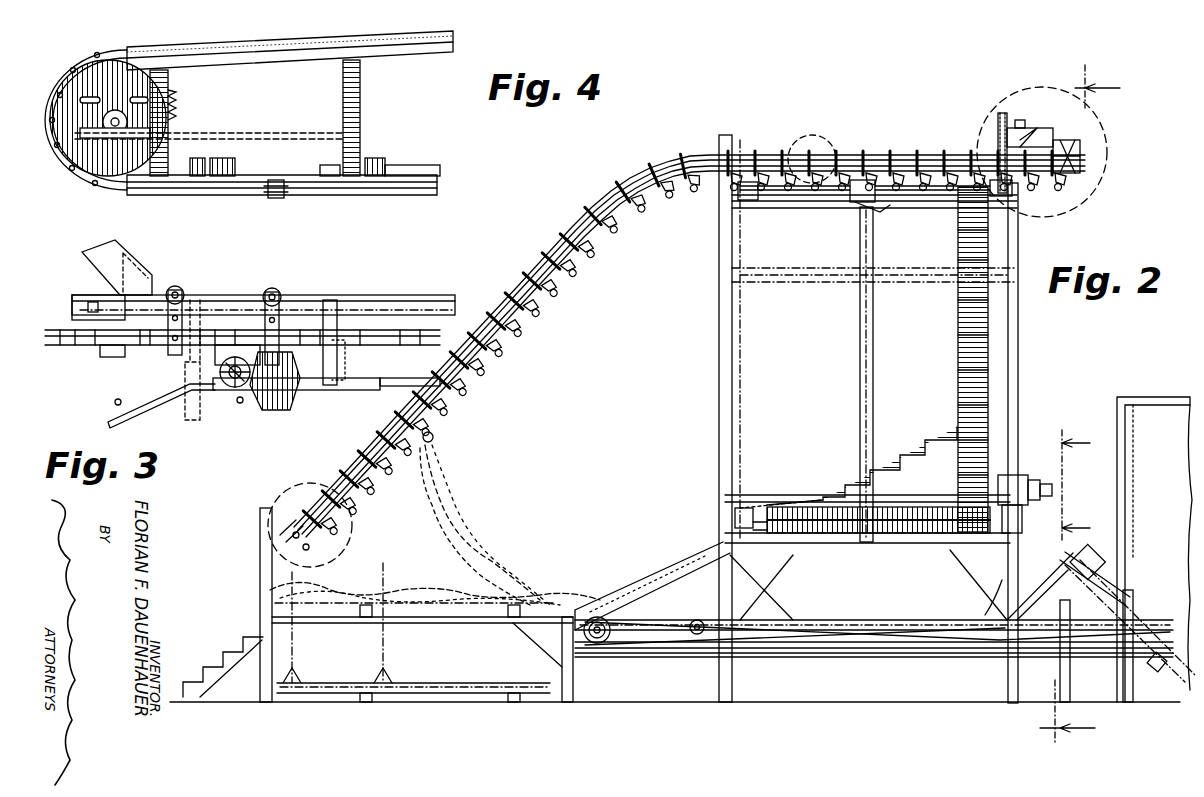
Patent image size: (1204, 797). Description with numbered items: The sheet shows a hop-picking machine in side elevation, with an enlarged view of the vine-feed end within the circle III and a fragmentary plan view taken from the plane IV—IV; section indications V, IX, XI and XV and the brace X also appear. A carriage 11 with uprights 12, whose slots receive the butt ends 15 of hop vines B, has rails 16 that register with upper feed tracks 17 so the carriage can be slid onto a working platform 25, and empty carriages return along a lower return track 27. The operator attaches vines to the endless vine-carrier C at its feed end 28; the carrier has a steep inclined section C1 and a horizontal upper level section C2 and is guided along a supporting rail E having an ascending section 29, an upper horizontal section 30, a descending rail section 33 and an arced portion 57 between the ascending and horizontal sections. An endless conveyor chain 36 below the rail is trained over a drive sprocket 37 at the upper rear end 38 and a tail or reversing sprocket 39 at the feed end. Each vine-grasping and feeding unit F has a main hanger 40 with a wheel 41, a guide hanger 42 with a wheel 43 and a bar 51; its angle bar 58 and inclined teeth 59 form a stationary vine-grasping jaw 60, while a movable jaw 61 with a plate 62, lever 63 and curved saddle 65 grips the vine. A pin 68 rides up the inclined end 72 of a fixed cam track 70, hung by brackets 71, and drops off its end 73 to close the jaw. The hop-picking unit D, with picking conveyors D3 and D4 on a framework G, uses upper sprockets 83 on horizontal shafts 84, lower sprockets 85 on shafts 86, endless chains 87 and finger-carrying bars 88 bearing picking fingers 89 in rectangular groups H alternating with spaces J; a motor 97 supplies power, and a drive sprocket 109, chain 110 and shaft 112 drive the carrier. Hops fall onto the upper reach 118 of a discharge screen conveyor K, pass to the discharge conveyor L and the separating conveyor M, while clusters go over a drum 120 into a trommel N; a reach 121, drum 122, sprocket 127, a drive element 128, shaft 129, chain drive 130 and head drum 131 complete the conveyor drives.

In FIG. 2, the carriage 11 is at (489, 675).
In FIG. 2, the uprights 12 is at (288, 575).
In FIG. 2, the butt ends 15 is at (435, 438).
In FIG. 2, the rails 16 is at (520, 605).
In FIG. 2, the upper feed tracks 17 is at (513, 617).
In FIG. 2, the working platform 25 is at (448, 625).
In FIG. 2, the lower return track 27 is at (360, 696).
In FIG. 4, the feed end 28 is at (90, 198).
In FIG. 3, the feed end 28 is at (95, 380).
In FIG. 2, the feed end 28 is at (270, 552).
In FIG. 4, the ascending section 29 is at (217, 203).
In FIG. 2, the ascending section 29 is at (325, 474).
In FIG. 2, the upper horizontal section 30 is at (773, 149).
In FIG. 4, the descending rail section 33 is at (287, 38).
In FIG. 4, the endless conveyor chain 36 is at (62, 160).
In FIG. 3, the endless conveyor chain 36 is at (78, 345).
In FIG. 2, the endless conveyor chain 36 is at (605, 238).
In FIG. 2, the drive sprocket 37 is at (1078, 172).
In FIG. 2, the upper rear end 38 is at (1094, 155).
In FIG. 4, the tail or reversing sprocket 39 is at (80, 80).
In FIG. 3, the tail or reversing sprocket 39 is at (72, 316).
In FIG. 2, the tail or reversing sprocket 39 is at (278, 540).
In FIG. 3, the main hanger 40 is at (290, 325).
In FIG. 2, the main hanger 40 is at (536, 288).
In FIG. 4, the wheel 41 is at (290, 198).
In FIG. 3, the wheel 41 is at (275, 288).
In FIG. 3, the guide hanger 42 is at (200, 320).
In FIG. 2, the guide hanger 42 is at (520, 302).
In FIG. 4, the wheel 43 is at (140, 190).
In FIG. 3, the wheel 43 is at (176, 286).
In FIG. 3, the bar 51 is at (240, 345).
In FIG. 2, the arced portion 57 is at (667, 165).
In FIG. 3, the angle bar 58 is at (292, 405).
In FIG. 3, the inclined teeth 59 is at (268, 412).
In FIG. 3, the stationary vine-grasping jaw 60 is at (243, 418).
In FIG. 2, the stationary vine-grasping jaw 60 is at (466, 409).
In FIG. 3, the movable jaw 61 is at (282, 383).
In FIG. 2, the movable jaw 61 is at (529, 347).
In FIG. 3, the plate 62 is at (215, 392).
In FIG. 4, the lever 63 is at (232, 160).
In FIG. 3, the lever 63 is at (185, 372).
In FIG. 3, the curved saddle 65 is at (232, 357).
In FIG. 3, the pin 68 is at (117, 399).
In FIG. 4, the fixed cam track 70 is at (378, 157).
In FIG. 3, the fixed cam track 70 is at (358, 390).
In FIG. 2, the fixed cam track 70 is at (325, 537).
In FIG. 4, the brackets 71 is at (200, 158).
In FIG. 3, the brackets 71 is at (345, 372).
In FIG. 3, the inclined end 72 is at (110, 424).
In FIG. 2, the inclined end 72 is at (312, 550).
In FIG. 4, the end of the track 73 is at (392, 170).
In FIG. 3, the end of the track 73 is at (405, 387).
In FIG. 2, the upper sprockets 83 is at (740, 190).
In FIG. 2, the horizontal shafts 84 is at (786, 200).
In FIG. 2, the lower sprockets 85 is at (735, 528).
In FIG. 2, the shafts 86 is at (752, 520).
In FIG. 2, the endless chains 87 is at (735, 388).
In FIG. 2, the finger-carrying bars 88 is at (988, 440).
In FIG. 2, the picking fingers 89 is at (947, 313).
In FIG. 2, the motor 97 is at (1018, 482).
In FIG. 2, the drive sprocket 109 is at (1012, 192).
In FIG. 2, the chain 110 is at (1000, 143).
In FIG. 2, the shaft 112 is at (1030, 128).
In FIG. 2, the upper reach 118 is at (985, 585).
In FIG. 2, the drum 120 is at (1060, 560).
In FIG. 2, the reach 121 is at (660, 645).
In FIG. 2, the drum 122 is at (598, 643).
In FIG. 2, the sprocket 127 is at (1110, 566).
In FIG. 2, the drive unit 128 is at (1105, 555).
In FIG. 2, the shaft 129 is at (1095, 552).
In FIG. 2, the chain drive 130 is at (1110, 640).
In FIG. 2, the head drum 131 is at (1150, 665).
In FIG. 2, the hop vines B is at (448, 498).
In FIG. 2, the endless vine-carrier C is at (553, 233).
In FIG. 2, the inclined section C1 is at (546, 324).
In FIG. 2, the horizontal upper level section C2 is at (930, 149).
In FIG. 2, the hop-picking unit D is at (1000, 353).
In FIG. 2, the picking conveyor D3 is at (840, 505).
In FIG. 2, the picking conveyor D4 is at (912, 480).
In FIG. 4, the supporting rail E is at (378, 22).
In FIG. 3, the supporting rail E is at (418, 282).
In FIG. 2, the supporting rail E is at (655, 165).
In FIG. 4, the vine-grasping and feeding units F is at (183, 201).
In FIG. 3, the vine-grasping and feeding units F is at (302, 356).
In FIG. 2, the vine-grasping and feeding units F is at (560, 307).
In FIG. 2, the framework G is at (704, 392).
In FIG. 2, the rectangular groups H is at (946, 354).
In FIG. 2, the spaces J is at (946, 382).
In FIG. 2, the discharge screen conveyor K is at (670, 571).
In FIG. 2, the discharge conveyor L is at (915, 614).
In FIG. 2, the separating conveyor M is at (1165, 665).
In FIG. 2, the trommel N is at (1175, 391).
In FIG. 2, the section V is at (828, 142).
In FIG. 2, the brace X is at (761, 586).
In FIG. 2, the circle III is at (352, 525).
In FIG. 3, the plane IV— IV is at (347, 440).
In FIG. 2, the plane IV— IV is at (258, 500).
In FIG. 2, the section IX is at (1092, 407).
In FIG. 2, the section XI is at (1108, 160).
In FIG. 2, the section XV is at (1086, 485).